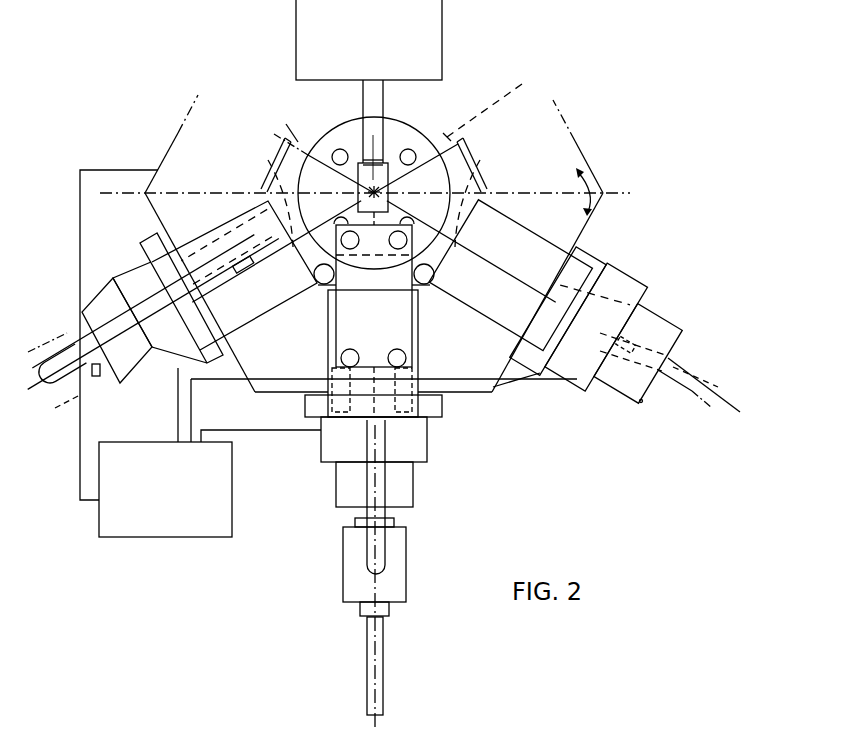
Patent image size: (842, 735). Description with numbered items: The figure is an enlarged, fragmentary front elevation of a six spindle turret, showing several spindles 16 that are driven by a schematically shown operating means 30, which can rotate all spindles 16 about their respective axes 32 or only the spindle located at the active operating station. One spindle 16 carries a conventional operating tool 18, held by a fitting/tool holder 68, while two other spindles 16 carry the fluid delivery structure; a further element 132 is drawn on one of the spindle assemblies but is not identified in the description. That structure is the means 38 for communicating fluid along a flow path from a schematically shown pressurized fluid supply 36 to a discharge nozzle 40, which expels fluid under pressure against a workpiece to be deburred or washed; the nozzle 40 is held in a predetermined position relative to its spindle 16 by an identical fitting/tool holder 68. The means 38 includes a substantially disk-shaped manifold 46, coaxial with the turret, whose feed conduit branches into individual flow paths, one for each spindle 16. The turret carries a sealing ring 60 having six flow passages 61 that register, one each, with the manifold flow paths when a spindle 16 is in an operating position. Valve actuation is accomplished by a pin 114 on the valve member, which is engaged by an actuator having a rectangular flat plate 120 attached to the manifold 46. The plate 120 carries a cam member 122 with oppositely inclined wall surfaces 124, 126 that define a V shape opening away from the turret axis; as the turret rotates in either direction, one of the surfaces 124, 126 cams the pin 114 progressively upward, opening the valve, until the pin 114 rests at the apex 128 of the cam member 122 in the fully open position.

The spindle 16 is at (127, 275).
The operating tool 18 is at (646, 406).
The operating means 30 is at (156, 524).
The axis 32 is at (250, 242).
The pressurized fluid supply 36 is at (367, 77).
The means for communicating fluid 38 is at (423, 112).
The discharge nozzle 40 is at (385, 672).
The manifold 46 is at (430, 176).
The sealing ring 60 is at (298, 131).
The flow passages 61 is at (267, 160).
The fitting/tool holder 68 is at (608, 384).
The pin 114 is at (388, 343).
The plate 120 is at (334, 354).
The cam member 122 is at (388, 343).
The inclined wall surface 124 is at (350, 354).
The inclined wall surface 126 is at (400, 352).
The apex 128 is at (372, 372).
The spindle 132 is at (688, 362).